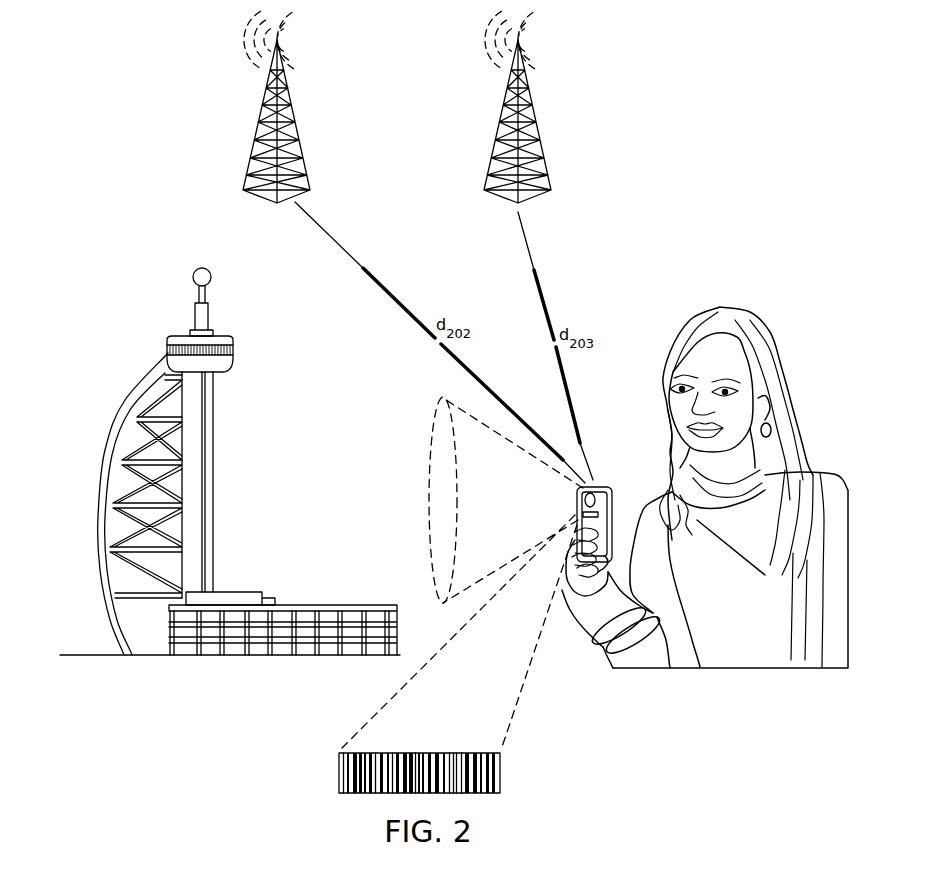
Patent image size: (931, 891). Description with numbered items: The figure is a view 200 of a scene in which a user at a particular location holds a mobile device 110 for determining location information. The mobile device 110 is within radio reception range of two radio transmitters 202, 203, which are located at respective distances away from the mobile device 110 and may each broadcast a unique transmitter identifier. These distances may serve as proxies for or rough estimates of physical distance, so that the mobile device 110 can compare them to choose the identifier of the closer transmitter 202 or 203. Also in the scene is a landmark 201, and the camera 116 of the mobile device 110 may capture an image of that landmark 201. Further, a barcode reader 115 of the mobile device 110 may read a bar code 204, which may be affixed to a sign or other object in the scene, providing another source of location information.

The view 200 is at (716, 97).
The landmark 201 is at (126, 405).
The radio transmitter 202 is at (259, 118).
The radio transmitter 203 is at (536, 125).
The bar code 204 is at (340, 769).
The mobile device 110 is at (586, 491).
The barcode reader 115 is at (593, 524).
The camera 116 is at (578, 501).